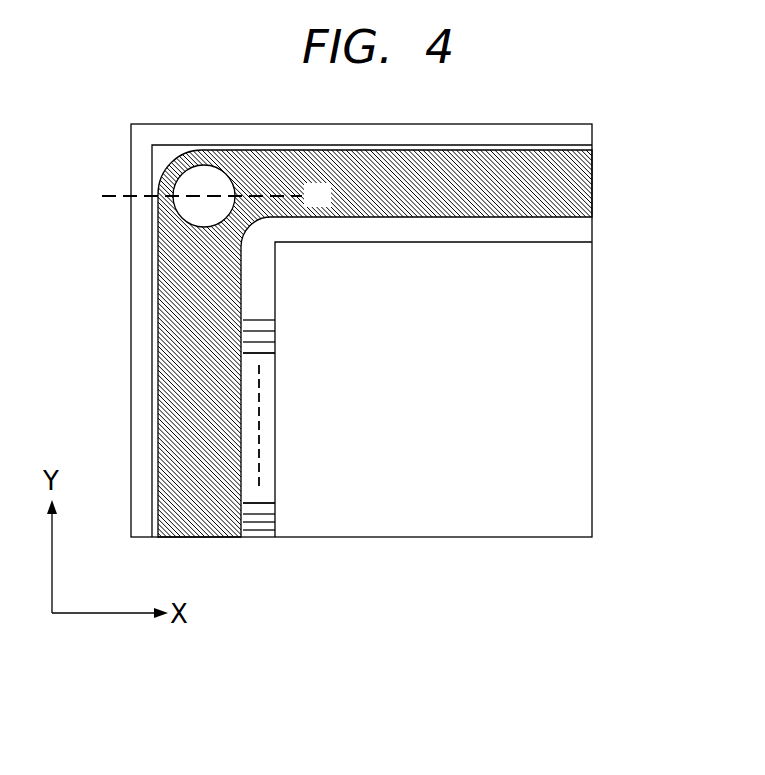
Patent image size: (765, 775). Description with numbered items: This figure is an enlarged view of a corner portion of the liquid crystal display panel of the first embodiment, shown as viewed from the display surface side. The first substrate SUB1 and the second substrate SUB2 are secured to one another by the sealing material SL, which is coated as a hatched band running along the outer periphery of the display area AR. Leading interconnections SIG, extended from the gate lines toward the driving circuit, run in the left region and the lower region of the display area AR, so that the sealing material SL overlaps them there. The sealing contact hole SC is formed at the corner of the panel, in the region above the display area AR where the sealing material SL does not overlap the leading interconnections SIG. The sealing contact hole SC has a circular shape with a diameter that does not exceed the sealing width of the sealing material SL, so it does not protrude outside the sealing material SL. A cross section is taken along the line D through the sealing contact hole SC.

The first substrate SUB1 is at (592, 284).
The second substrate SUB2 is at (592, 324).
The sealing material SL is at (592, 172).
The sealing contact hole SC is at (206, 173).
The line D- D is at (205, 196).
The display area AR is at (585, 412).
The leading interconnections SIG is at (259, 537).